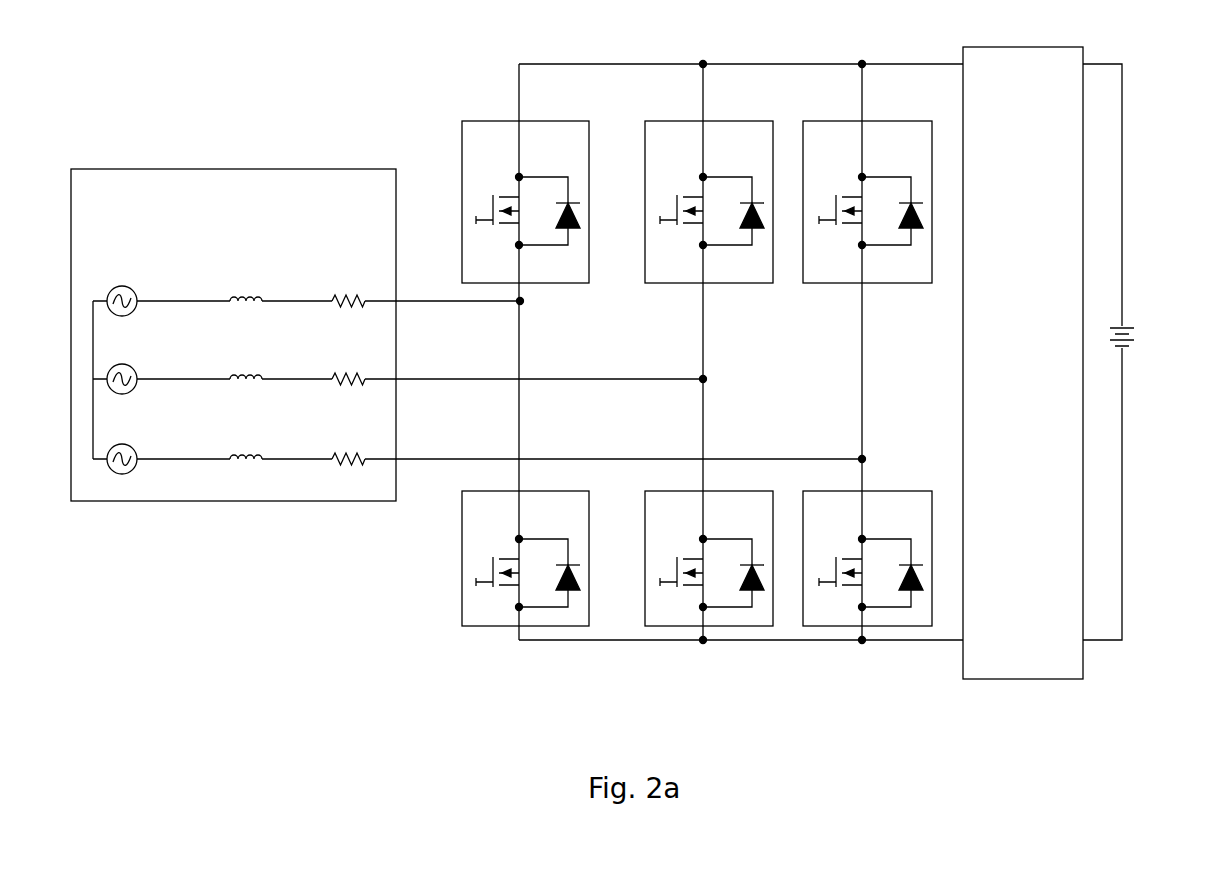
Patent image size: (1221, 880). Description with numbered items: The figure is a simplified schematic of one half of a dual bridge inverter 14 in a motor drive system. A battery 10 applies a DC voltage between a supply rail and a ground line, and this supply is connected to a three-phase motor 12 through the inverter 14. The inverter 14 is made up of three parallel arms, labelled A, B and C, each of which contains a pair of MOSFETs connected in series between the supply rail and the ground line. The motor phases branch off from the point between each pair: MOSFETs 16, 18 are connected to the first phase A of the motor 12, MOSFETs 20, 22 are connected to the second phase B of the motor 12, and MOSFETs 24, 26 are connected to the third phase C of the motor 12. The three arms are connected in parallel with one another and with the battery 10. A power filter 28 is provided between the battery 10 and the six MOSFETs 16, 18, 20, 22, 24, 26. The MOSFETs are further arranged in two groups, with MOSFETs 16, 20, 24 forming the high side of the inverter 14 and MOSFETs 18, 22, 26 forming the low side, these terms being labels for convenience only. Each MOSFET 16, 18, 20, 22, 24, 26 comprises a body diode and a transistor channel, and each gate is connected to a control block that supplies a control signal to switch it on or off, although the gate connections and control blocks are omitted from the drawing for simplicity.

The battery 10 is at (1160, 350).
The three-phase motor 12 is at (142, 482).
The inverter 14 is at (709, 373).
The MOSFET 16 is at (525, 188).
The MOSFET 18 is at (525, 544).
The MOSFET 20 is at (709, 188).
The MOSFET 22 is at (709, 544).
The MOSFET 24 is at (867, 188).
The MOSFET 26 is at (867, 544).
The power filter 28 is at (1026, 633).